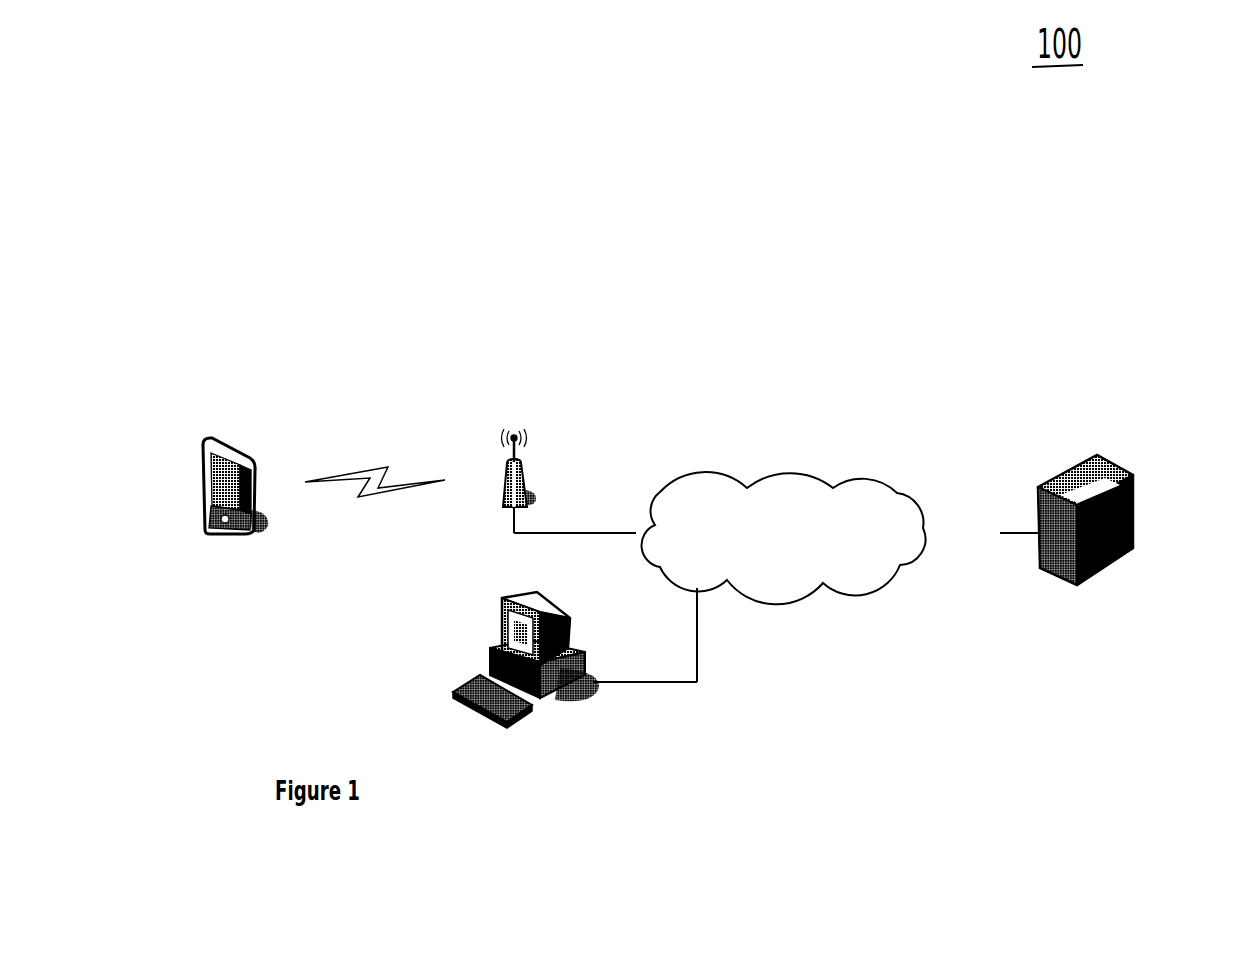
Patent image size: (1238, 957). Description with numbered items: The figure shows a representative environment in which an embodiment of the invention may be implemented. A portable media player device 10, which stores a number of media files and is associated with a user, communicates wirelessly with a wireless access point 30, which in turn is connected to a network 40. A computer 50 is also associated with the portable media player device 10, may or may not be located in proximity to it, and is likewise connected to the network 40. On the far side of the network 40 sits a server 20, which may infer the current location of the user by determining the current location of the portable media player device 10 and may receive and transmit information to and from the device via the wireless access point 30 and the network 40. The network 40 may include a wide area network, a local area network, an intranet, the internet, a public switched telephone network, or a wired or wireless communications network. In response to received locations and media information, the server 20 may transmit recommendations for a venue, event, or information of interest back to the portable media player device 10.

The portable media player device 10 is at (237, 443).
The server 20 is at (1113, 458).
The wireless access point 30 is at (525, 482).
The network 40 is at (817, 470).
The computer 50 is at (550, 602).